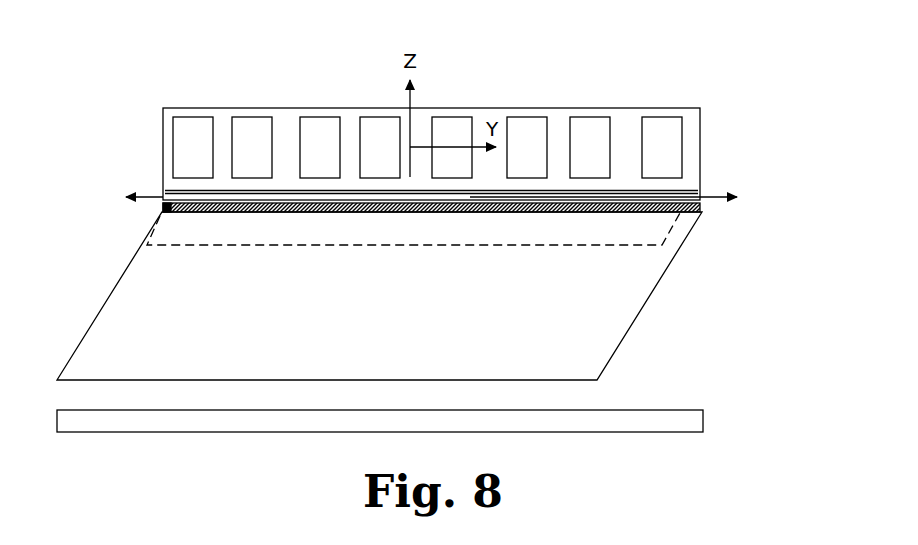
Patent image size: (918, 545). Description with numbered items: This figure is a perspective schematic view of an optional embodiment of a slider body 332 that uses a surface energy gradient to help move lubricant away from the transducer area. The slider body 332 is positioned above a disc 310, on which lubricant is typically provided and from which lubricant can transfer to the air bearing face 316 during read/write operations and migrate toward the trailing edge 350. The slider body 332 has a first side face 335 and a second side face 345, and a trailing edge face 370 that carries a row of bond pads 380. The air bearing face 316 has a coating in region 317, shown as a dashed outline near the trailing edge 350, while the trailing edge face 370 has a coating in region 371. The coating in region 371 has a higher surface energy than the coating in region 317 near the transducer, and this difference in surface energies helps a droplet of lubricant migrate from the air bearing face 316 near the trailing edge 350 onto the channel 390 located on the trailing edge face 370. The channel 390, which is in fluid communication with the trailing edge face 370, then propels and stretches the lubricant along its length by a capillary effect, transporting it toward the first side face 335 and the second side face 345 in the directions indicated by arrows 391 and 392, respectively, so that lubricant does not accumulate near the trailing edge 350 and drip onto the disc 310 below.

The disc 310 is at (703, 418).
The air bearing face 316 is at (369, 325).
The coating region 317 is at (282, 228).
The slider body 332 is at (516, 80).
The first side face 335 is at (81, 274).
The second side face 345 is at (702, 124).
The trailing edge 350 is at (703, 210).
The trailing edge face 370 is at (627, 125).
The coating region 371 is at (431, 213).
The bond pads 380 is at (320, 125).
The channel 390 is at (625, 192).
The arrow 391 is at (152, 195).
The arrow 392 is at (712, 192).